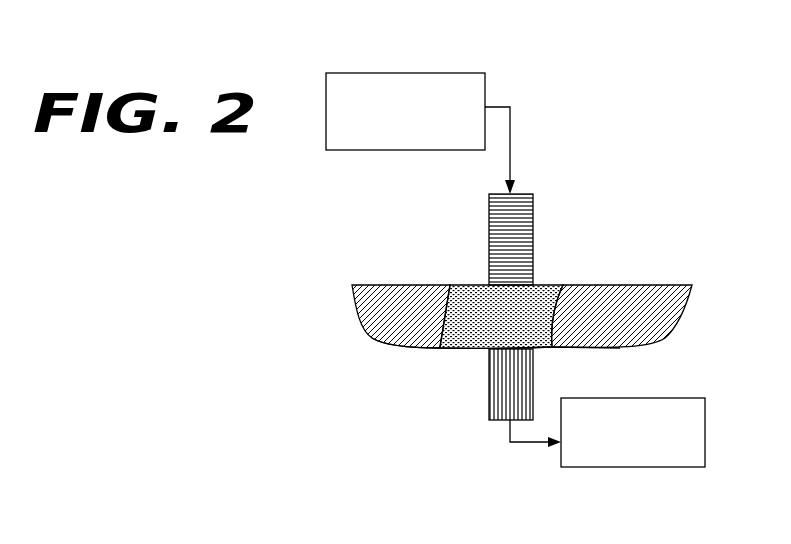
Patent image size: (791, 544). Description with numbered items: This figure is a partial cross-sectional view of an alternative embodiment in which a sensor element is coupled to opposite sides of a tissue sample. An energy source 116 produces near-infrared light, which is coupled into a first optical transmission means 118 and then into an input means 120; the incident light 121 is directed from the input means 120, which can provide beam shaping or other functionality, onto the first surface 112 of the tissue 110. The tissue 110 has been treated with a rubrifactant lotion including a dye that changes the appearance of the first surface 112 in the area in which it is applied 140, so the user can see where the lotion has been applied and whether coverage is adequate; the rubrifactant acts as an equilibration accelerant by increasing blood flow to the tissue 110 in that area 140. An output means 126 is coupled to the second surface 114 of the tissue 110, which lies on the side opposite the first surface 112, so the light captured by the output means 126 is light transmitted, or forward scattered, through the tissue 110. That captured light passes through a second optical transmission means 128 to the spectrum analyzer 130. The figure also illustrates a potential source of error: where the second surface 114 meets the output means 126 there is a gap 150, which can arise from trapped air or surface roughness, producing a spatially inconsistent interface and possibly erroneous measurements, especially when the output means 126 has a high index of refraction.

The tissue 110 is at (378, 313).
The first surface 112 is at (680, 285).
The second surface 114 is at (390, 349).
The energy source 116 is at (440, 73).
The first optical transmission means 118 is at (511, 157).
The input means 120 is at (526, 225).
The incident energy direction 121 is at (458, 205).
The output means 126 is at (495, 392).
The second optical transmission means 128 is at (518, 446).
The spectrum analyzer 130 is at (657, 467).
The area of applied lotion 140 is at (478, 307).
The gap 150 is at (541, 355).